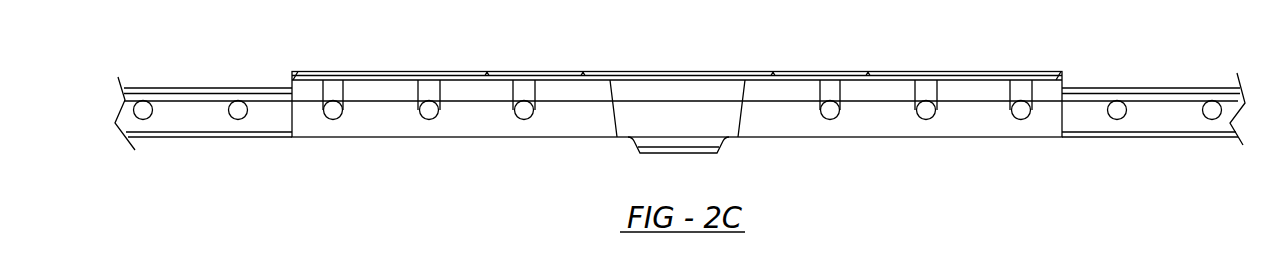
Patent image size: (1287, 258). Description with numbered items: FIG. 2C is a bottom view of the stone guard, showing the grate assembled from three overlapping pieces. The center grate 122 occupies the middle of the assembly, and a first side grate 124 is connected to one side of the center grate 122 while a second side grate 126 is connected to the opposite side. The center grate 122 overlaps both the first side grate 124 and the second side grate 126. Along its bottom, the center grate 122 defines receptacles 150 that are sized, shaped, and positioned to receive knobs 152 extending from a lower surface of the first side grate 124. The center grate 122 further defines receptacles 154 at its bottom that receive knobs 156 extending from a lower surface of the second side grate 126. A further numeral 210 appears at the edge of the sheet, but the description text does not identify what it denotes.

The center grate 122 is at (663, 72).
The first side grate 124 is at (207, 88).
The second side grate 126 is at (1160, 88).
The receptacles 150 is at (343, 117).
The knobs 152 is at (143, 115).
The receptacles 154 is at (828, 117).
The knobs 156 is at (836, 117).
The component 210 is at (135, 257).